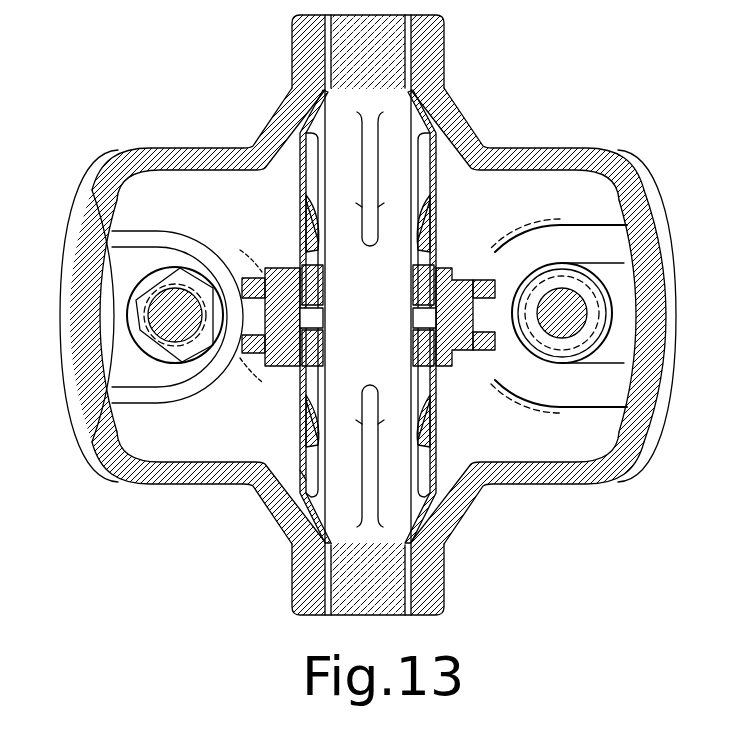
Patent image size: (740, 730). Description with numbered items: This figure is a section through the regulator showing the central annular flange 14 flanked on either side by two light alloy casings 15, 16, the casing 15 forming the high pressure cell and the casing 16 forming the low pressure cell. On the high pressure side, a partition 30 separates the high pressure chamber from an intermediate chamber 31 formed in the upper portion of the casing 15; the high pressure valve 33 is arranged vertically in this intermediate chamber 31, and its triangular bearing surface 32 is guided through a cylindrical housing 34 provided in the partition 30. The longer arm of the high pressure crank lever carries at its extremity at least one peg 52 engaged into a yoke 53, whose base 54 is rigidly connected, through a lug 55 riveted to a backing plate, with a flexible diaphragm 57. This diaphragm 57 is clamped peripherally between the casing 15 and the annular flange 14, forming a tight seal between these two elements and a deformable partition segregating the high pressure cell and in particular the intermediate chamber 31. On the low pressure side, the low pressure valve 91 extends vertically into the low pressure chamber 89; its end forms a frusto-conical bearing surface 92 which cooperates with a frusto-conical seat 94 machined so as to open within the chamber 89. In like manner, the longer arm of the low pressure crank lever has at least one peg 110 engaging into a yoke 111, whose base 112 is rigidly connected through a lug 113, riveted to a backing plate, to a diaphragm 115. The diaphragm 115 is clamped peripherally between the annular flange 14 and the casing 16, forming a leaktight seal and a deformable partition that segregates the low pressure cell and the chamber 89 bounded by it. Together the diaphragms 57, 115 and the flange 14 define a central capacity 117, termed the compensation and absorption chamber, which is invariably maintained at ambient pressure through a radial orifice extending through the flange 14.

The annular flange 14 is at (405, 44).
The light alloy casing 15 is at (208, 150).
The light alloy casing 16 is at (552, 470).
The partition 30 is at (110, 262).
The intermediate chamber 31 is at (258, 200).
The triangular bearing surface 32 is at (135, 303).
The high pressure valve 33 is at (182, 295).
The cylindrical housing 34 is at (140, 340).
The peg 52 is at (258, 382).
The yoke 53 is at (258, 272).
The base 54 is at (284, 372).
The lug 55 is at (330, 292).
The flexible diaphragm 57 is at (320, 500).
The low pressure chamber 89 is at (473, 175).
The low pressure valve 91 is at (566, 300).
The frusto-conical bearing surface 92 is at (597, 308).
The frusto-conical seat 94 is at (598, 345).
The peg 110 is at (462, 322).
The yoke 111 is at (472, 278).
The base 112 is at (448, 372).
The lug 113 is at (411, 333).
The diaphragm 115 is at (435, 480).
The central capacity 117 is at (380, 312).